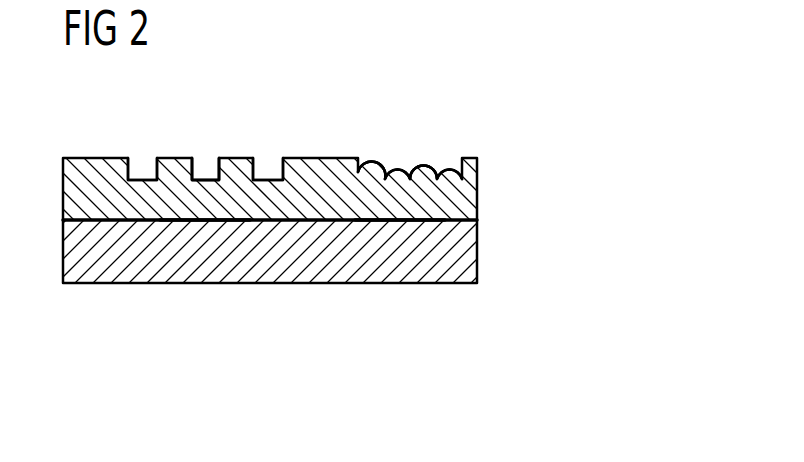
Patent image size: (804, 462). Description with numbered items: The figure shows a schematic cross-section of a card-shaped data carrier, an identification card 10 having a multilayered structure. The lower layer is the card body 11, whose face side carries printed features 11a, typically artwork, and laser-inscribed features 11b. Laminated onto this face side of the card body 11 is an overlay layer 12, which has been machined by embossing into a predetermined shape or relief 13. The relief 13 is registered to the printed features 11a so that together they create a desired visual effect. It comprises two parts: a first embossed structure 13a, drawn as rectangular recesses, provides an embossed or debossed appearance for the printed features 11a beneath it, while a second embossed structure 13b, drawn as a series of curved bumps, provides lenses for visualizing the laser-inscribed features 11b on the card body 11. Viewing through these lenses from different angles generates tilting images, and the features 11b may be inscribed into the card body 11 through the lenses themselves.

The identification card 10 is at (490, 138).
The card body 11 is at (467, 260).
The printed features 11a is at (205, 228).
The laser-inscribed features 11b is at (398, 228).
The overlay layer 12 is at (467, 197).
The relief 13 is at (397, 75).
The first embossed structure 13a is at (208, 154).
The second embossed structure 13b is at (399, 154).